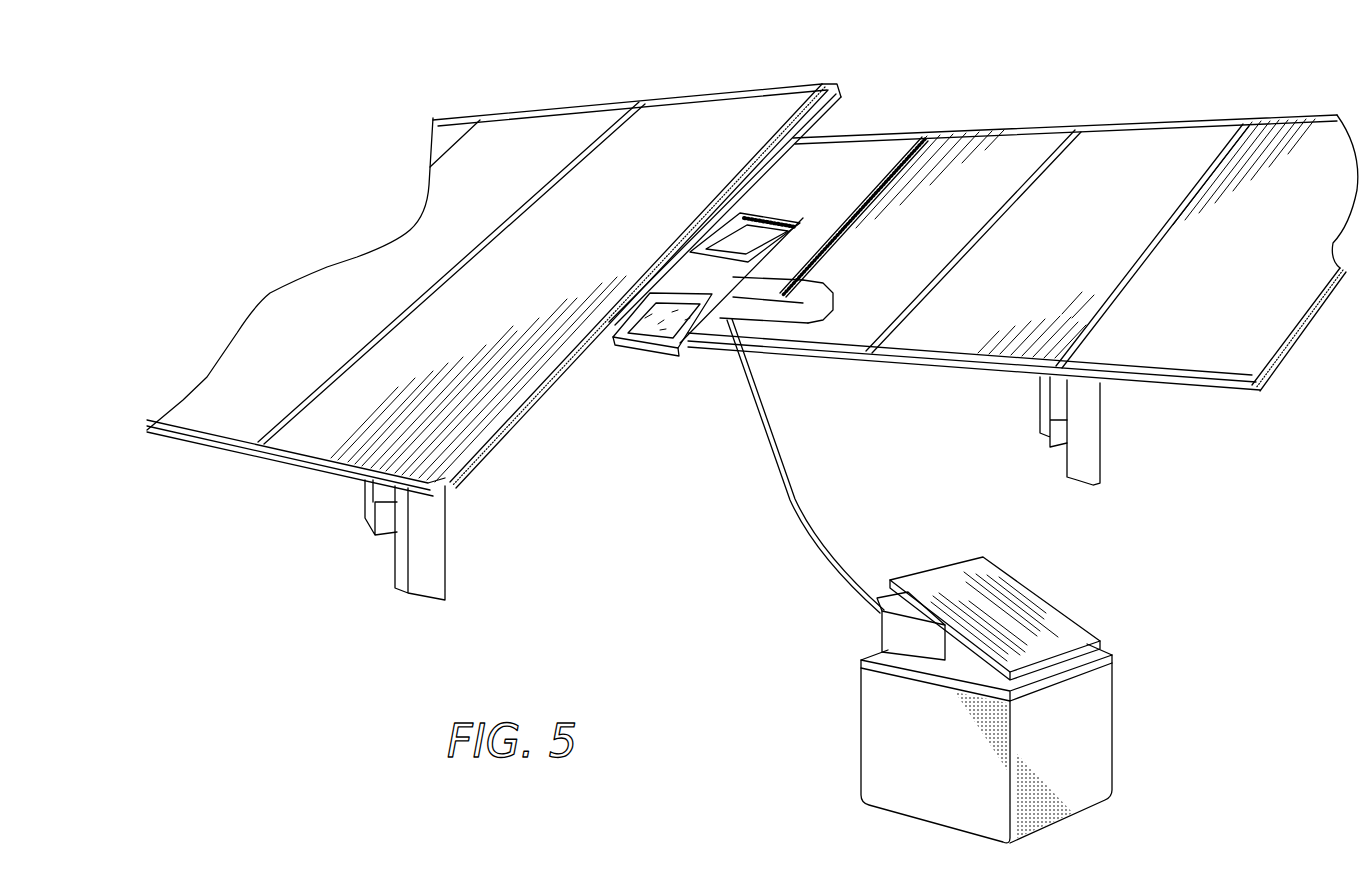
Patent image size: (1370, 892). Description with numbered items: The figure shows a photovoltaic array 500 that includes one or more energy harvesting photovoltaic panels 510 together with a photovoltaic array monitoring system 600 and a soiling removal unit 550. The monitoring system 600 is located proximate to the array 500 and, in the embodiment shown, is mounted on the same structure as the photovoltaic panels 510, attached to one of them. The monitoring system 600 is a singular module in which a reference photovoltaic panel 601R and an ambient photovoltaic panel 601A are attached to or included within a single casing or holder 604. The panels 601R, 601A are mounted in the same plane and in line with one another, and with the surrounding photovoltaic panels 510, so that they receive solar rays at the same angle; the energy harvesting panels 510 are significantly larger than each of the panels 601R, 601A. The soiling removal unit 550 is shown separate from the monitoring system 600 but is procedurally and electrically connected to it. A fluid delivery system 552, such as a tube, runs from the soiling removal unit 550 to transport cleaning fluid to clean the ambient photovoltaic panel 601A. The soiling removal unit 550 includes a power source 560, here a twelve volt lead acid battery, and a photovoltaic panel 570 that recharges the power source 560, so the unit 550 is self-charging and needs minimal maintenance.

The photovoltaic array 500 is at (300, 190).
The photovoltaic panel 510 is at (640, 206).
The photovoltaic array monitoring system 600 is at (799, 195).
The reference photovoltaic panel 601R is at (742, 238).
The ambient photovoltaic panel 601A is at (647, 322).
The casing or holder 604 is at (682, 344).
The fluid delivery system 552 is at (788, 517).
The power source 560 is at (870, 637).
The photovoltaic panel 570 is at (1055, 623).
The soiling removal unit 550 is at (1116, 697).